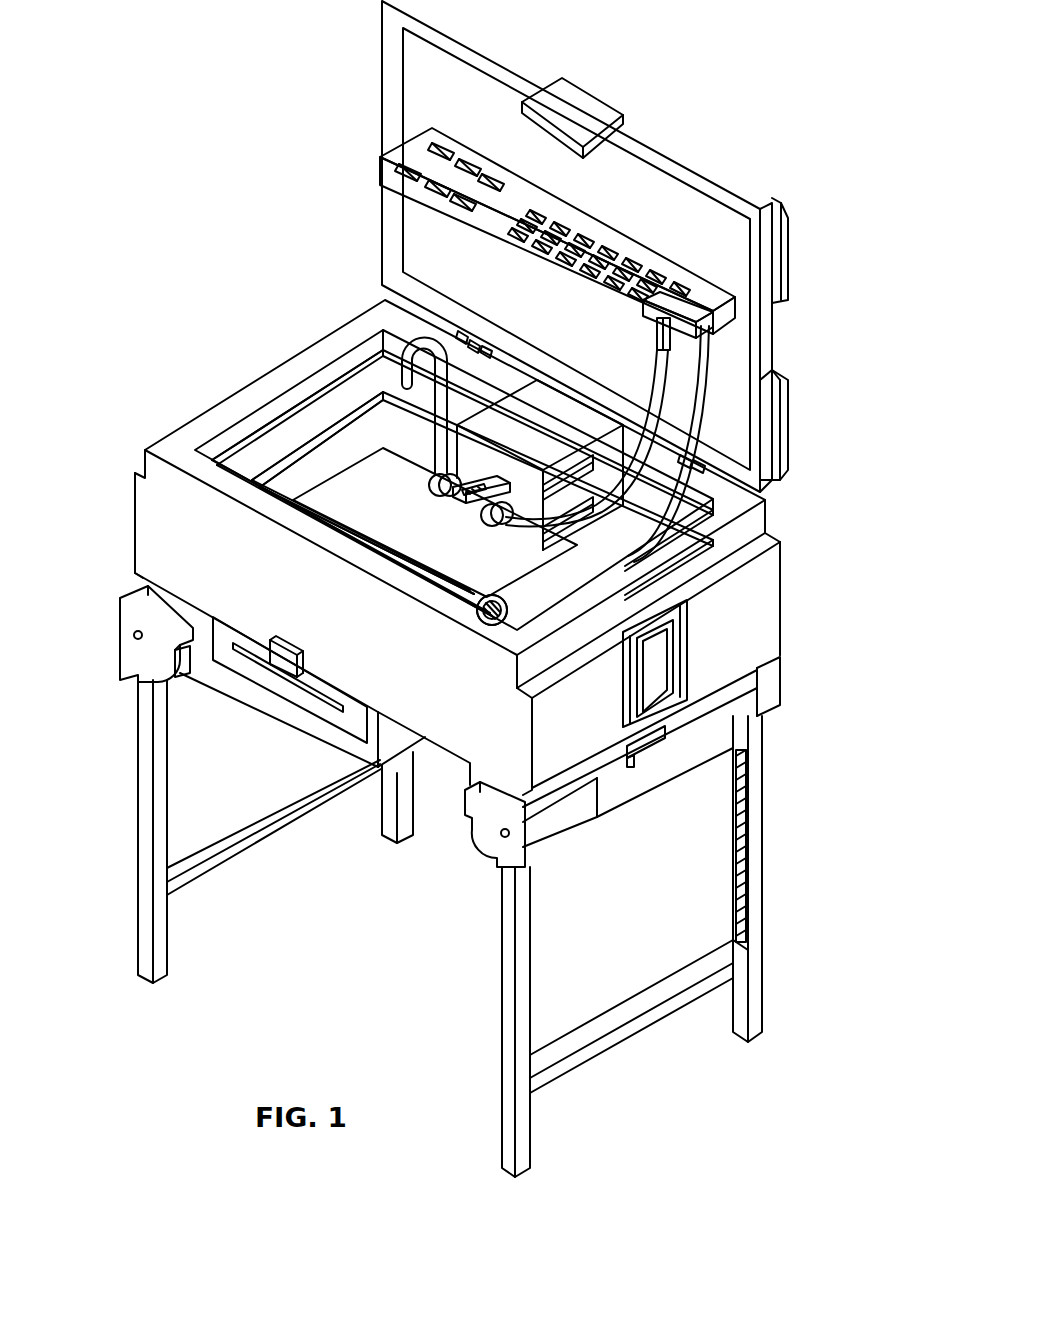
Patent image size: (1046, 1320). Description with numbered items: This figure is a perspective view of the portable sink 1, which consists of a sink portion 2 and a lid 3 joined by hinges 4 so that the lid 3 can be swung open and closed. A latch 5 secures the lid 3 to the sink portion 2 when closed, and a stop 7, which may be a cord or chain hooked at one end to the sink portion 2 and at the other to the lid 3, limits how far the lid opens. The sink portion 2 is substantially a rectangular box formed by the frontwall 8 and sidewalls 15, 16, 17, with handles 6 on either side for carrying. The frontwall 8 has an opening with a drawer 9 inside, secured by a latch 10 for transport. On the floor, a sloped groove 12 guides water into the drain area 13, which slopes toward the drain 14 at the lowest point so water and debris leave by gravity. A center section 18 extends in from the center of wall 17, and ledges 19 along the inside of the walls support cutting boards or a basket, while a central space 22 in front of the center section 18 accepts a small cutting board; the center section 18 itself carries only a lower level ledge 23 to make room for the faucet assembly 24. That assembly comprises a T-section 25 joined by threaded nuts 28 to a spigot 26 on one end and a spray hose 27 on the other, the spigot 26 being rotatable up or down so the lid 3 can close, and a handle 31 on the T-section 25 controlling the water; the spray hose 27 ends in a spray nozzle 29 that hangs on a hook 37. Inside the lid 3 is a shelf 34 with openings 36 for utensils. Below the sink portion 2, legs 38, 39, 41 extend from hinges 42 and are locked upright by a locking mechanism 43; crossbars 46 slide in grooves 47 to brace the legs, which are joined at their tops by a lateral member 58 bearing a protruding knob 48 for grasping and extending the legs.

The portable sink 1 is at (499, 881).
The sink portion 2 is at (186, 366).
The lid 3 is at (758, 150).
The hinges 4 is at (470, 334).
The latch 5 is at (608, 95).
The handles 6 is at (680, 656).
The stop 7 is at (698, 384).
The frontwall 8 is at (170, 540).
The drawer 9 is at (332, 712).
The latch 10 is at (300, 645).
The groove 12 is at (371, 524).
The drain area 13 is at (515, 612).
The drain 14 is at (487, 613).
The sidewall 15 is at (720, 608).
The sidewall 16 is at (290, 358).
The sidewall 17 is at (768, 498).
The center section 18 is at (523, 442).
The ledges 19 is at (344, 397).
The central space 22 is at (446, 528).
The lower level ledge 23 is at (478, 615).
The faucet assembly 24 is at (430, 518).
The T-section 25 is at (487, 473).
The spigot 26 is at (416, 330).
The spray hose 27 is at (655, 360).
The threaded nuts 28 is at (428, 488).
The spray nozzle 29 is at (654, 322).
The handle 31 is at (468, 501).
The shelf 34 is at (548, 194).
The openings 36 is at (497, 176).
The hook 37 is at (700, 302).
The leg 38 is at (532, 920).
The leg 39 is at (767, 815).
The leg 41 is at (170, 923).
The hinge 42 is at (135, 640).
The locking mechanism 43 is at (185, 677).
The crossbars 46 is at (300, 835).
The grooves 47 is at (738, 896).
The protruding knob 48 is at (644, 770).
The lateral member 58 is at (612, 790).